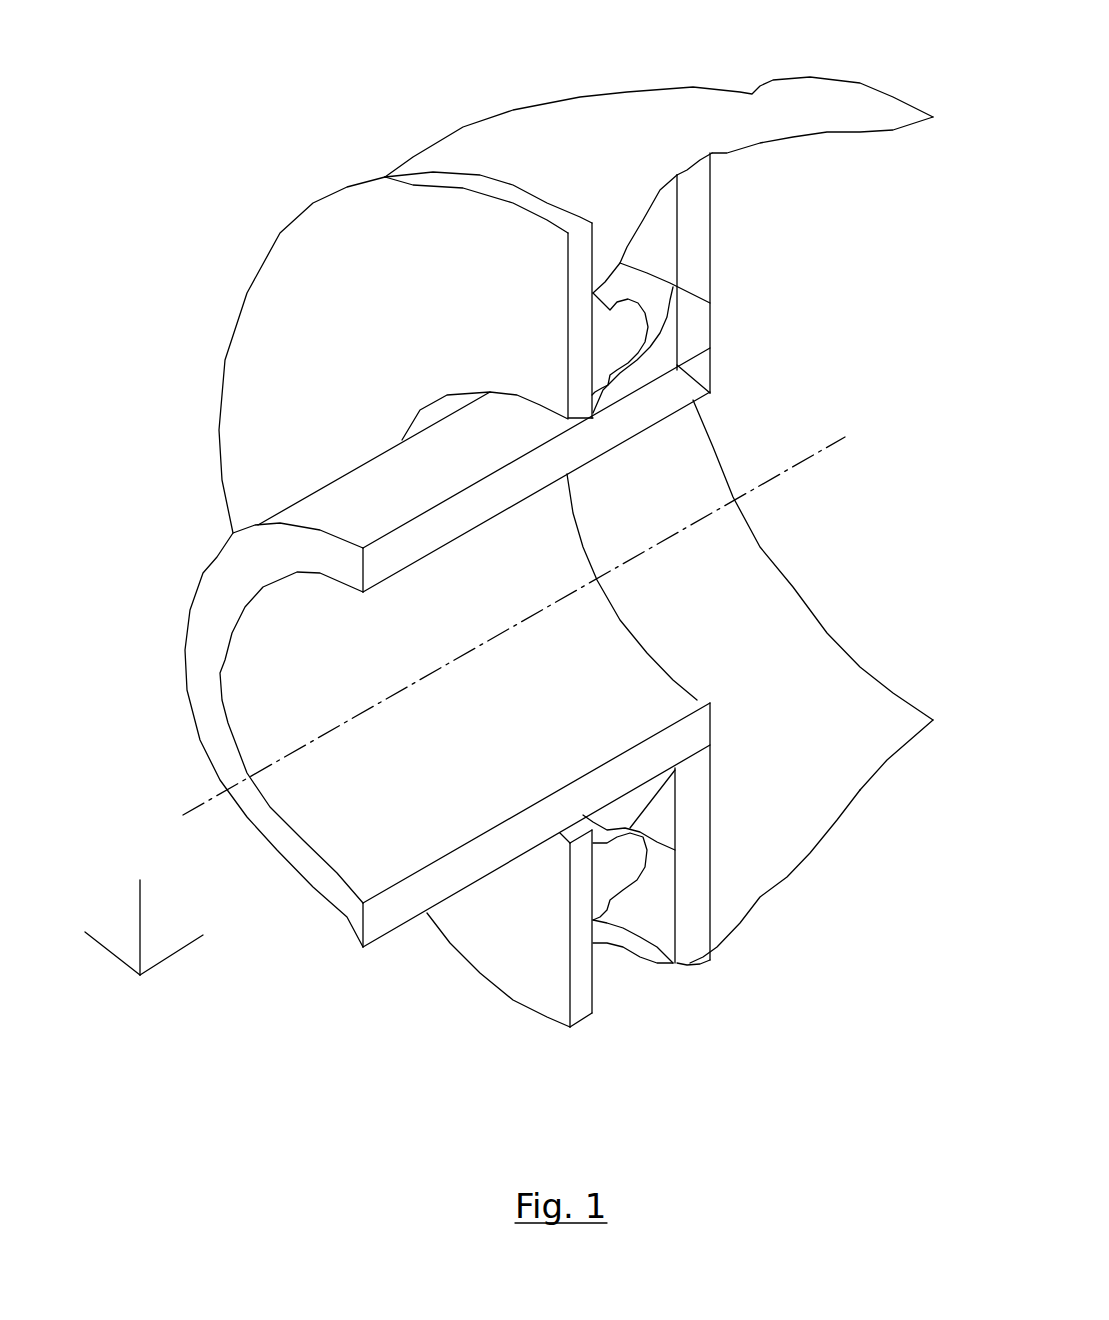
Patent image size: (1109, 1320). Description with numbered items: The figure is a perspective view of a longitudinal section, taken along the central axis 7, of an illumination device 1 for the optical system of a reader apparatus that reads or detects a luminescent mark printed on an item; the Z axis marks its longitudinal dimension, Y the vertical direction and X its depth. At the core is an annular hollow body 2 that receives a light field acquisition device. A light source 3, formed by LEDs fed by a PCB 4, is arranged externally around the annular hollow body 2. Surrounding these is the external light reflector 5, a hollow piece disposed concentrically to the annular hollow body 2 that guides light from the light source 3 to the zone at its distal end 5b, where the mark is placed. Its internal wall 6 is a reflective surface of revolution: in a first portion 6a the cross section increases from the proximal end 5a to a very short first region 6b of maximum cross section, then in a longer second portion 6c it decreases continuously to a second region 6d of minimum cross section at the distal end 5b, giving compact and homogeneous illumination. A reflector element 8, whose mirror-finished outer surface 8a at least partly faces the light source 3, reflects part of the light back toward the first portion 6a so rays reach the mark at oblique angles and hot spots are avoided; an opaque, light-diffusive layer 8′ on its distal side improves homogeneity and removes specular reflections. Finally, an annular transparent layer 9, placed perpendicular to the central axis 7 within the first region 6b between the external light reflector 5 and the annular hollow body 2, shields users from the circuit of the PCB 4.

The illumination device 1 is at (155, 205).
The annular hollow body 2 is at (205, 607).
The light source 3 is at (617, 343).
The PCB 4 is at (343, 265).
The external light reflector 5 is at (620, 112).
The proximal end 5a is at (595, 948).
The distal end 5b is at (808, 608).
The internal wall 6 is at (827, 707).
The first portion 6a is at (640, 952).
The first region 6b is at (700, 957).
The second portion 6c is at (827, 837).
The second region 6d is at (908, 742).
The central axis 7 is at (212, 800).
The reflector element 8 is at (670, 325).
The opaque layer 8′ is at (697, 323).
The outer surface 8a is at (645, 295).
The transparent layer 9 is at (700, 182).